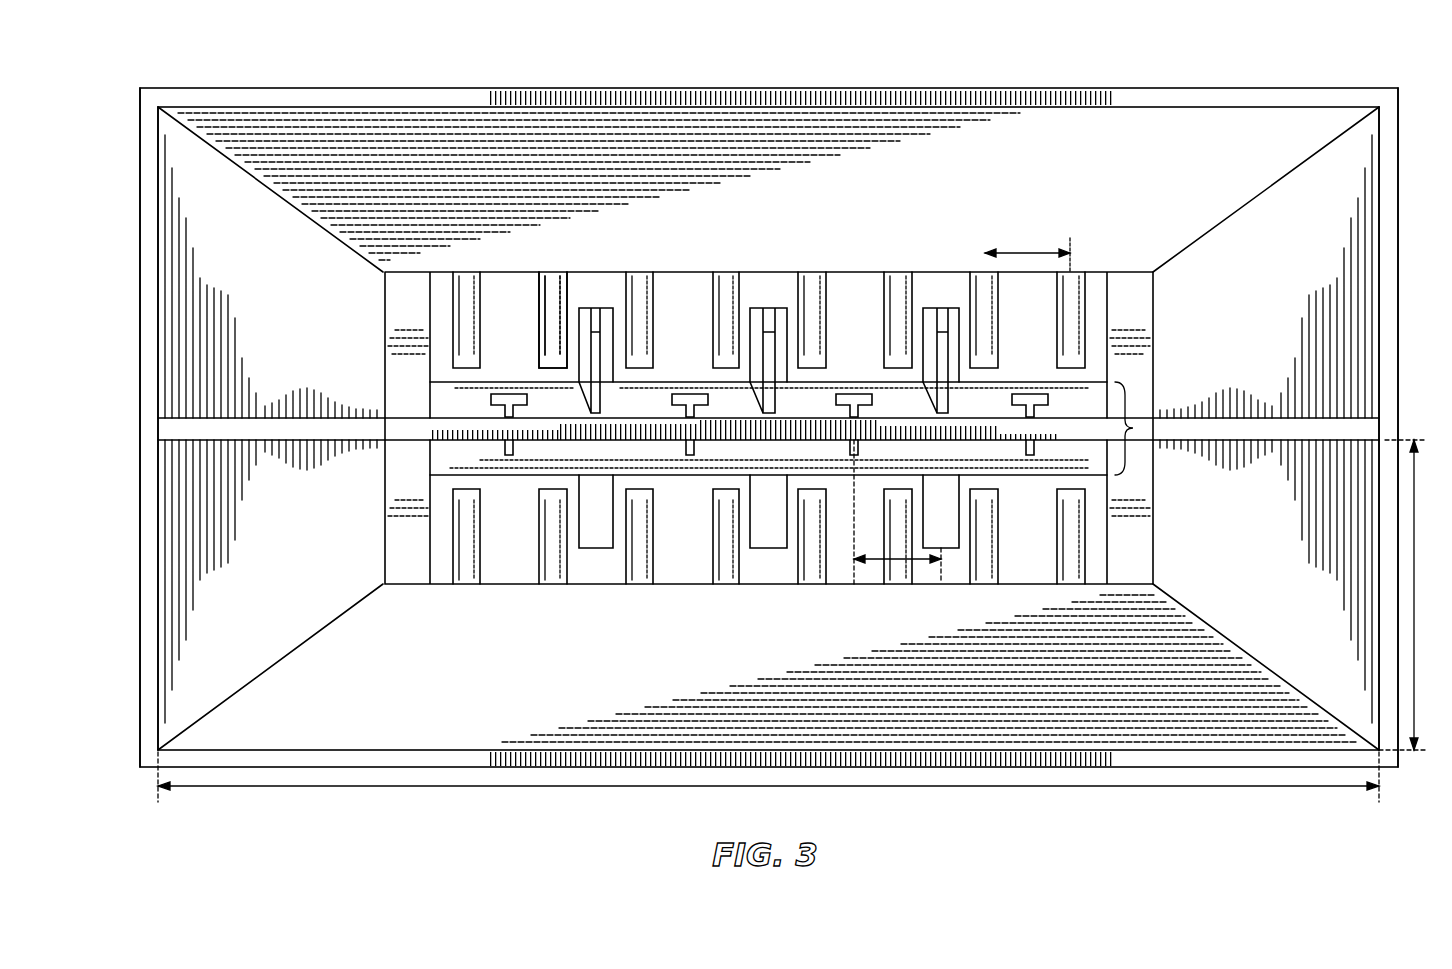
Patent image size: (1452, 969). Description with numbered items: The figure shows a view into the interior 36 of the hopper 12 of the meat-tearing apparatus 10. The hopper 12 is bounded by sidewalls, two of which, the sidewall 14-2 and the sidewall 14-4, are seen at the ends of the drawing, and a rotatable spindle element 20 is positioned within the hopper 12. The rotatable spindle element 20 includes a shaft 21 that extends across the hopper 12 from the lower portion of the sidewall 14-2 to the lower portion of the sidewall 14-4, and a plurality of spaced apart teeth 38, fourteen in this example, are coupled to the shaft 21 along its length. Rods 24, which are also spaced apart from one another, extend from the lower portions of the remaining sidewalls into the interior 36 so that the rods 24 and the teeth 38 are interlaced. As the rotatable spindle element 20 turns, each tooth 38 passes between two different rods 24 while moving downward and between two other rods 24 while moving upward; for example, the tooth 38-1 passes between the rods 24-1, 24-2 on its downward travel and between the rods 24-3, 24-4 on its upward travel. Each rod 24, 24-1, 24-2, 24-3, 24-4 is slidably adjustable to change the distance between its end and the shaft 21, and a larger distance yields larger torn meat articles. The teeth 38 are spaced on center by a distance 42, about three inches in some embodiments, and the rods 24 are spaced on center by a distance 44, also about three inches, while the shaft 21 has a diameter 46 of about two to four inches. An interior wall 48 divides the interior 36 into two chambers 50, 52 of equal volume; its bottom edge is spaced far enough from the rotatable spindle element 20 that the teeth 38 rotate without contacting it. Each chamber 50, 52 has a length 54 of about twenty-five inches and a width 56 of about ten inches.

The meat-tearing apparatus 10 is at (288, 60).
The hopper 12 is at (675, 60).
The sidewall 14-2 is at (1398, 335).
The sidewall 14-4 is at (140, 383).
The rotatable spindle element 20 is at (376, 300).
The shaft 21 is at (450, 400).
The rod 24 is at (480, 295).
The rod 24-1 is at (560, 292).
The rod 24-2 is at (650, 292).
The rod 24-3 is at (560, 565).
The rod 24-4 is at (648, 565).
The interior 36 is at (423, 120).
The tooth 38 is at (505, 395).
The tooth 38-1 is at (598, 345).
The distance 42 is at (900, 562).
The distance 44 is at (1025, 250).
The diameter 46 is at (1130, 420).
The interior wall 48 is at (207, 432).
The chamber 50 is at (188, 262).
The chamber 52 is at (210, 618).
The length 54 is at (603, 790).
The width 56 is at (1414, 615).